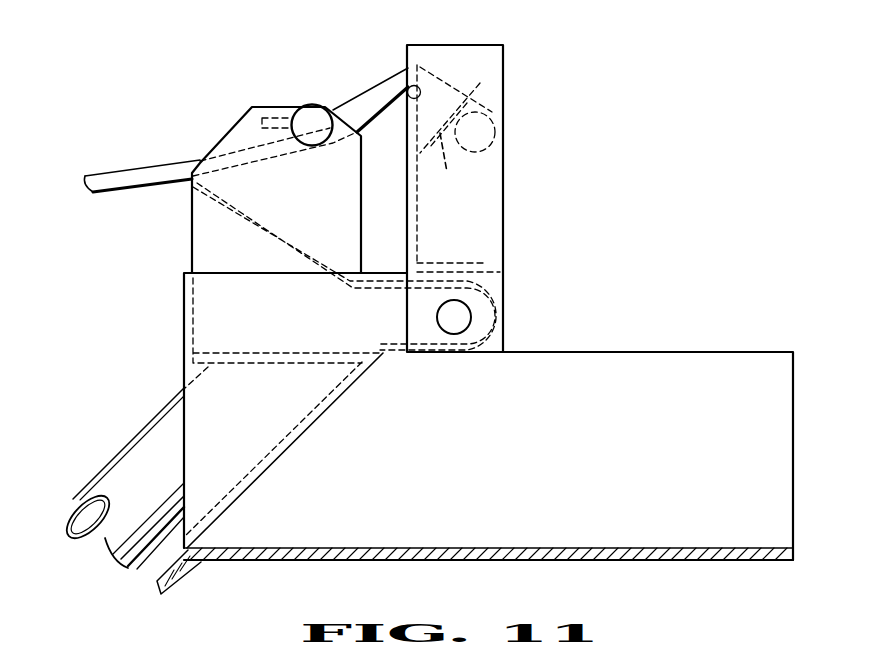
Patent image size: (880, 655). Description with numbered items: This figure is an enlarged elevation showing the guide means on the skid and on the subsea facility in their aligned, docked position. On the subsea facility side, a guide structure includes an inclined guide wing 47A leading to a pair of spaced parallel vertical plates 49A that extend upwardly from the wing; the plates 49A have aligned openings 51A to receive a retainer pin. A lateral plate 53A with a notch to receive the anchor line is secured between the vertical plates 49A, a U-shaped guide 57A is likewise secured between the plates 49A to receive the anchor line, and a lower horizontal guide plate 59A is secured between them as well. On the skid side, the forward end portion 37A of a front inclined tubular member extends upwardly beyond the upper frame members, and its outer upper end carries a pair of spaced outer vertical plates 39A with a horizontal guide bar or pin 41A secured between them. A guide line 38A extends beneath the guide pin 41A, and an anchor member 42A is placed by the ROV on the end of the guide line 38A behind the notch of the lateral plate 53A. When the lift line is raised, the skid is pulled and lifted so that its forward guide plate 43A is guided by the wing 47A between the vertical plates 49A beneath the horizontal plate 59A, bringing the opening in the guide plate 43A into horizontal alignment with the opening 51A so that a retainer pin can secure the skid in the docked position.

The forward end portion 37A is at (115, 458).
The guide line 38A is at (107, 173).
The outer vertical plate 39A is at (244, 118).
The horizontal guide bar or pin 41A is at (313, 106).
The anchor member 42A is at (493, 111).
The inner forward guide plate 43A is at (490, 290).
The inclined guide wing 47A is at (200, 343).
The vertical plate 49A is at (503, 197).
The opening 51A is at (452, 334).
The lateral plate 53A is at (455, 168).
The U-shaped guide 57A is at (423, 60).
The lower horizontal guide plate 59A is at (480, 263).